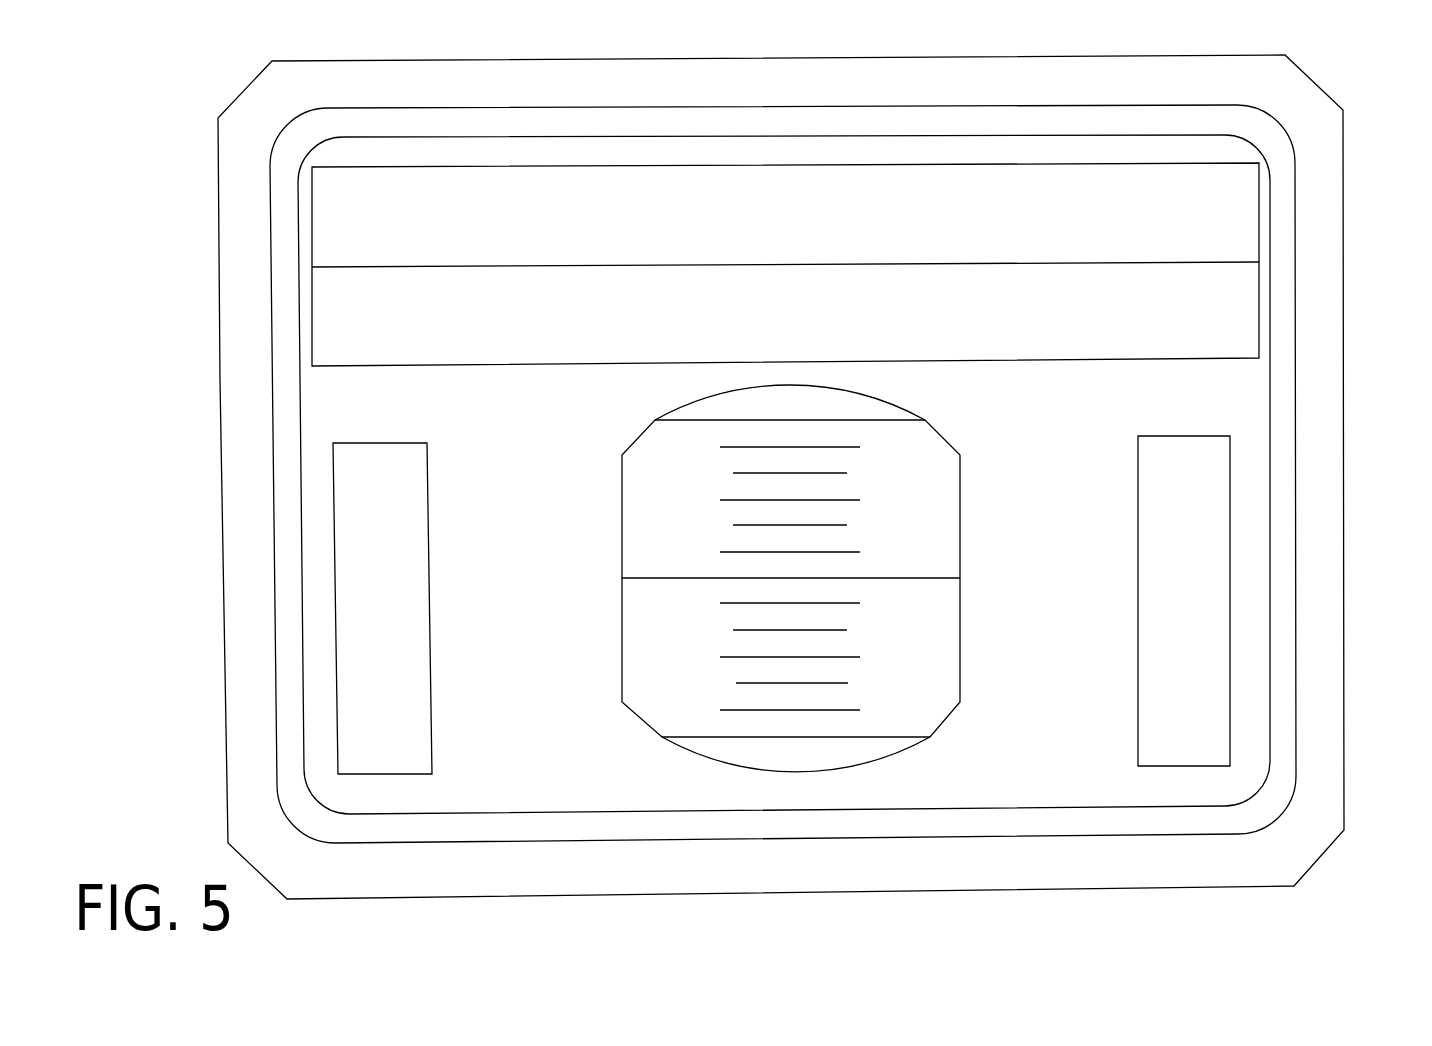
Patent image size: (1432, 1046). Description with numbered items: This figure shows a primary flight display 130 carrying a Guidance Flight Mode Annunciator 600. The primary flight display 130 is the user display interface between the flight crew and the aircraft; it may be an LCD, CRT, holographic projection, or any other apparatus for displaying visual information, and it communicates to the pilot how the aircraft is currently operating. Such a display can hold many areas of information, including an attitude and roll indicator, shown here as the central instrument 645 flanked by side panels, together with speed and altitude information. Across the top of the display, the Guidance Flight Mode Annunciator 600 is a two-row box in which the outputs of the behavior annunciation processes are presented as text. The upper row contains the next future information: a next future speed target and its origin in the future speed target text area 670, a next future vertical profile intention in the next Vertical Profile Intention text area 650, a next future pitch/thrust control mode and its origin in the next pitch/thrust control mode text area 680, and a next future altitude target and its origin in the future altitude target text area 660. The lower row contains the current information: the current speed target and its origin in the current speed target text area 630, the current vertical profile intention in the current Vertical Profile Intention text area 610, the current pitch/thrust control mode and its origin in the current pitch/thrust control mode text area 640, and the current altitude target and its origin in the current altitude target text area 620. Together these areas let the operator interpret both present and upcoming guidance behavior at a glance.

The primary flight display 130 is at (467, 797).
The Guidance Flight Mode Annunciator 600 is at (1270, 257).
The current Vertical Profile Intention text area 610 is at (690, 302).
The current altitude target text area 620 is at (1240, 317).
The current speed target text area 630 is at (337, 322).
The current pitch/thrust control mode text area 640 is at (900, 345).
The attitude indicator 645 is at (687, 725).
The next Vertical Profile Intention text area 650 is at (747, 180).
The future altitude target text area 660 is at (1108, 208).
The future speed target text area 670 is at (495, 225).
The next pitch/thrust control mode text area 680 is at (877, 233).